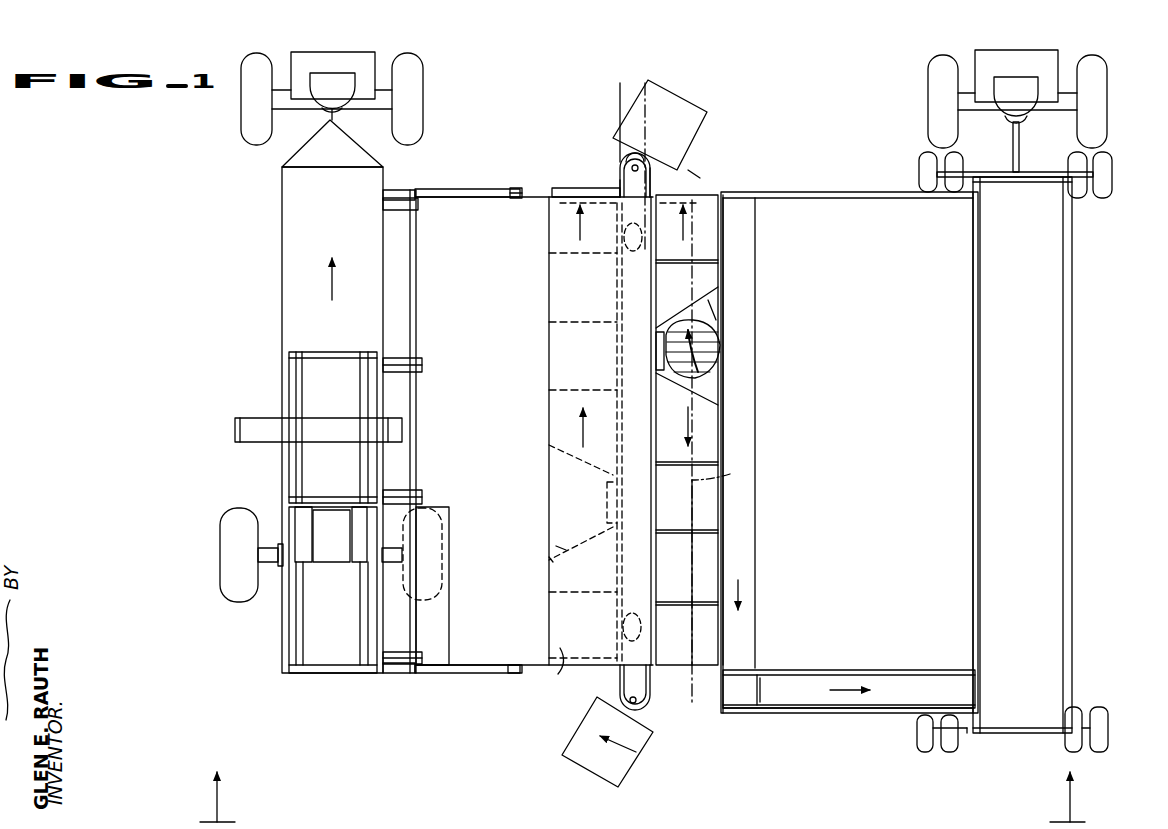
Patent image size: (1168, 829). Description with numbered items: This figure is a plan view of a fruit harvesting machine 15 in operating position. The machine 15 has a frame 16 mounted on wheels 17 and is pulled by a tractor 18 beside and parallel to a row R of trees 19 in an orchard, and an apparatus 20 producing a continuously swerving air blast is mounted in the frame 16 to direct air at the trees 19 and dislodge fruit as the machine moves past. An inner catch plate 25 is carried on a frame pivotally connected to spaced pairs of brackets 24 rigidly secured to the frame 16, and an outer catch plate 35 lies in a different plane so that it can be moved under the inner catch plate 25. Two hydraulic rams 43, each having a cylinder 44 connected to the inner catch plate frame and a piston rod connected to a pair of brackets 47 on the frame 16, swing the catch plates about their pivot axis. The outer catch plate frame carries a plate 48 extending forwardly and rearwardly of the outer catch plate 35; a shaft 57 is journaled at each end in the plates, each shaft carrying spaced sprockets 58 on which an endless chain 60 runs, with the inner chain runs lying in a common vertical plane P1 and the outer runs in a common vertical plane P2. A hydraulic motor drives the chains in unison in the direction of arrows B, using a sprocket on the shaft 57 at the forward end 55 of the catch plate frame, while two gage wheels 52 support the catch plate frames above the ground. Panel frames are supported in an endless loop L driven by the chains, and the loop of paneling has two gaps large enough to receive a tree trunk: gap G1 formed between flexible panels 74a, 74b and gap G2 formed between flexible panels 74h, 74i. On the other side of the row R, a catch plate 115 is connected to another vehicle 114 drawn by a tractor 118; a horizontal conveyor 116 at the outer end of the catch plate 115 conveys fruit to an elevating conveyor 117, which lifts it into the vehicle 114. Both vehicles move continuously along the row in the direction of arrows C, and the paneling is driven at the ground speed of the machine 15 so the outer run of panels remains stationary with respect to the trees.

The machine 15 is at (270, 290).
The frame 16 is at (283, 258).
The wheels 17 is at (240, 510).
The tractor 18 is at (330, 55).
The trees 19 is at (718, 346).
The apparatus to produce a continuously swerving air blast 20 is at (292, 462).
The brackets 24 is at (400, 206).
The inner catch plate 25 is at (534, 426).
The outer catch plate 35 is at (546, 671).
The hydraulic rams 43 is at (447, 188).
The cylinder 44 is at (488, 188).
The brackets 47 is at (392, 188).
The plate 48 is at (640, 200).
The gage wheels 52 is at (630, 250).
The forward end 55 is at (688, 170).
The shaft 57 is at (626, 180).
The sprockets 58 is at (620, 160).
The endless chain 60 is at (650, 166).
The panel 74a is at (716, 292).
The panel 74b is at (716, 404).
The panel 74h is at (549, 560).
The panel 74i is at (549, 440).
The vehicle 114 is at (1045, 403).
The catch plate 115 is at (849, 452).
The horizontal conveyor 116 is at (746, 541).
The elevating conveyor 117 is at (830, 678).
The tractor 118 is at (1012, 56).
The gap G1 is at (712, 315).
The gap G2 is at (560, 548).
The vertical plane P1 is at (620, 93).
The vertical plane P2 is at (672, 86).
The arrows B is at (688, 420).
The arrows C is at (344, 284).
The endless loop L is at (708, 193).
The row R is at (730, 474).